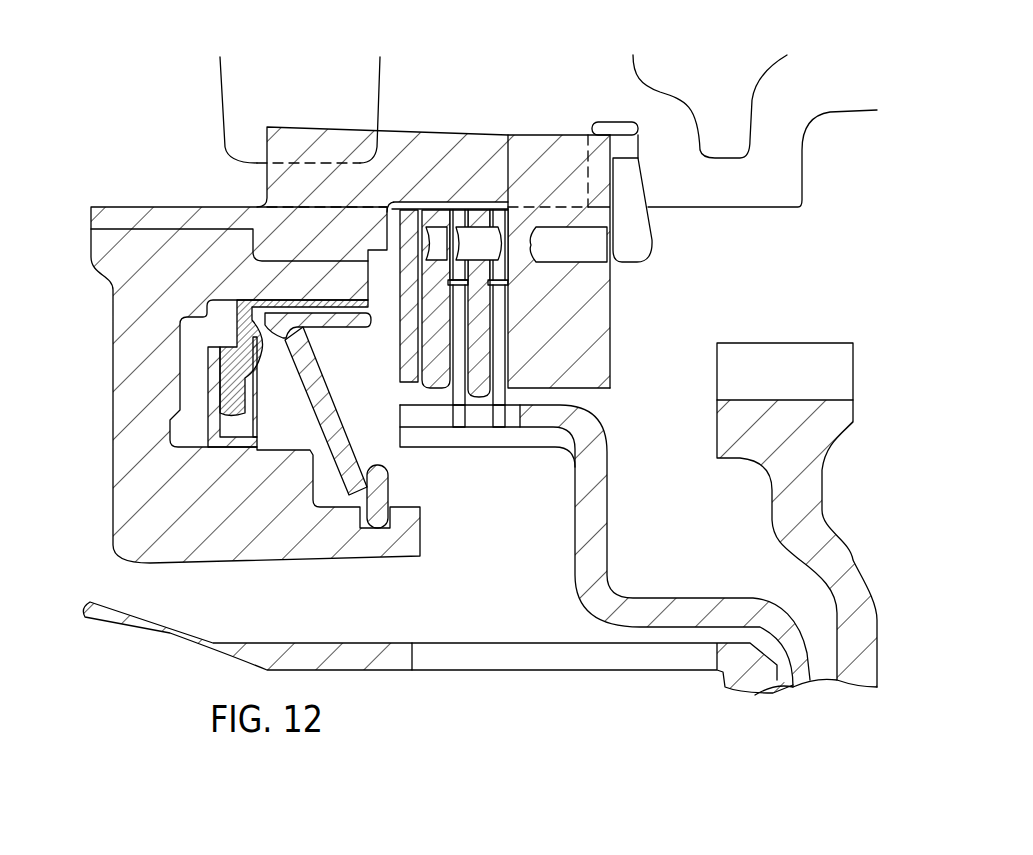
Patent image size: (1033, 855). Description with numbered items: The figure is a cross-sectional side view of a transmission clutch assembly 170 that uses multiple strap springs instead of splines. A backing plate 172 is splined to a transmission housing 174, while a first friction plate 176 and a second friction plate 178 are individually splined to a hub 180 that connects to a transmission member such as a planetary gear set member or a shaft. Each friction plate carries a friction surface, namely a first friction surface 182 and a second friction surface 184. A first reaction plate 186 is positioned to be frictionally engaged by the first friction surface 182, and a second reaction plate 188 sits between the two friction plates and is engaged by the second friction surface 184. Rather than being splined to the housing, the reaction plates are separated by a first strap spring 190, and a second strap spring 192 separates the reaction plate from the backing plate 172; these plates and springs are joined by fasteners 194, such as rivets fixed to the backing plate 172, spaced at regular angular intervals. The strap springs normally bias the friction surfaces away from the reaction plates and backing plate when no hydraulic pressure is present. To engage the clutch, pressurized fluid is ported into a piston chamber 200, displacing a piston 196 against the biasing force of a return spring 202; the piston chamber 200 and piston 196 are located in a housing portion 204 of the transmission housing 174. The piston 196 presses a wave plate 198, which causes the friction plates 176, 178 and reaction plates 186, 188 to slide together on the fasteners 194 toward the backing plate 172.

The clutch assembly 170 is at (537, 68).
The backing plate 172 is at (570, 167).
The transmission housing 174 is at (403, 160).
The first friction plate 176 is at (452, 417).
The second friction plate 178 is at (498, 417).
The hub 180 is at (550, 447).
The first friction surface 182 is at (447, 343).
The second friction surface 184 is at (492, 320).
The first reaction plate 186 is at (432, 382).
The second reaction plate 188 is at (480, 373).
The first strap spring 190 is at (450, 217).
The second strap spring 192 is at (493, 213).
The fastener 194 is at (575, 253).
The piston 196 is at (338, 322).
The wave plate 198 is at (400, 370).
The piston chamber 200 is at (193, 382).
The return spring 202 is at (320, 422).
The housing portion 204 is at (143, 330).